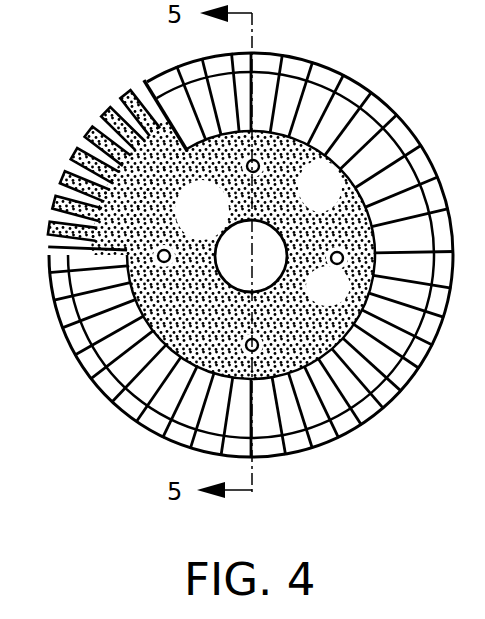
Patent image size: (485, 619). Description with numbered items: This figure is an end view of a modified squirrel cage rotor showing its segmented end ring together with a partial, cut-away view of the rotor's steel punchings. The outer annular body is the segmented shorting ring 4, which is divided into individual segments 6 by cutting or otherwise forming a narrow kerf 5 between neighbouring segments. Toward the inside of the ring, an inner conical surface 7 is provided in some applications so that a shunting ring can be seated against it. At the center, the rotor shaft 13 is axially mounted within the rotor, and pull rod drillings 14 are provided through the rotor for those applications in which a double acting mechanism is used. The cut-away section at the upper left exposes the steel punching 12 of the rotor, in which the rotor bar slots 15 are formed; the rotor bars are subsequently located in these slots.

The segmented shorting ring 4 is at (402, 117).
The kerf 5 is at (340, 76).
The individual segments 6 is at (417, 383).
The inner conical surface 7 is at (328, 163).
The steel punching 12 is at (82, 140).
The rotor shaft 13 is at (222, 233).
The pull rod drillings 14 is at (337, 265).
The rotor bar slots 15 is at (58, 200).